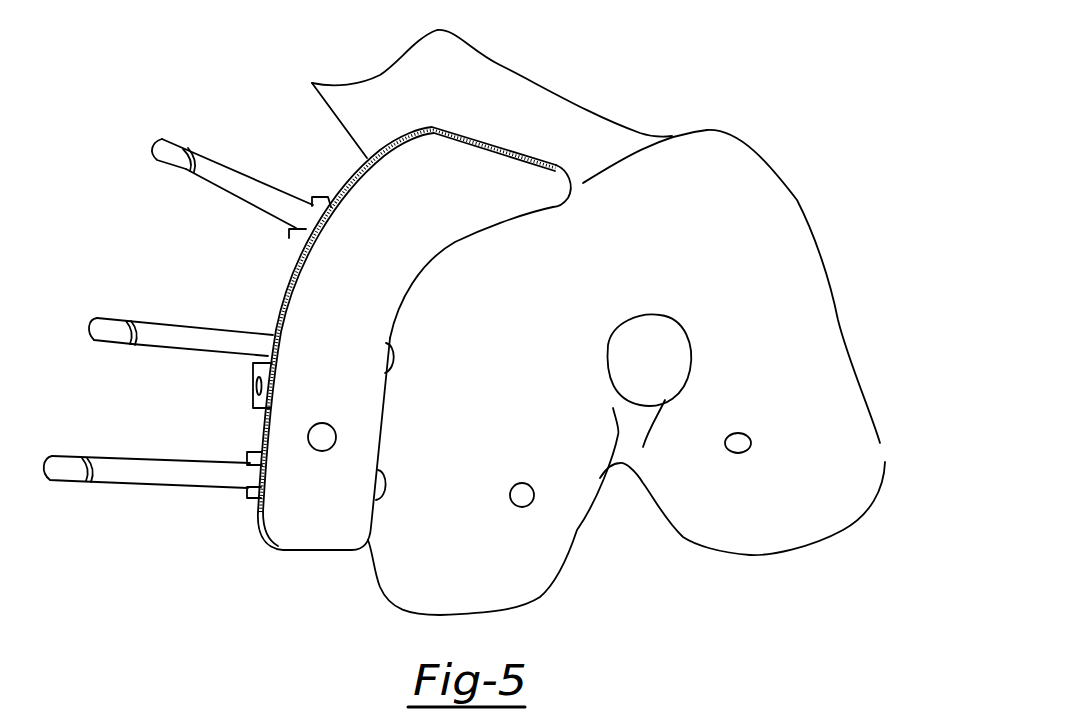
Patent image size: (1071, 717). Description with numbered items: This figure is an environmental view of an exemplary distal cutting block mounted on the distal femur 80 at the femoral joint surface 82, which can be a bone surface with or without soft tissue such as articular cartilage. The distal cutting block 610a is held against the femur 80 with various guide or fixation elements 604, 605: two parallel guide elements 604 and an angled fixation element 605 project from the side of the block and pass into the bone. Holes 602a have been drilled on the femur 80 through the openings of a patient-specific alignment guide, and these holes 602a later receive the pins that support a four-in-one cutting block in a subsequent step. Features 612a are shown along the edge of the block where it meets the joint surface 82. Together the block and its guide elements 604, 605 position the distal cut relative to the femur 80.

The distal femur 80 is at (777, 218).
The joint surface 82 is at (738, 282).
The holes 602a is at (743, 445).
The guide elements 604 is at (172, 344).
The fixation element 605 is at (205, 178).
The cutting guide shield 610a is at (250, 537).
The pin bosses 612a is at (379, 403).